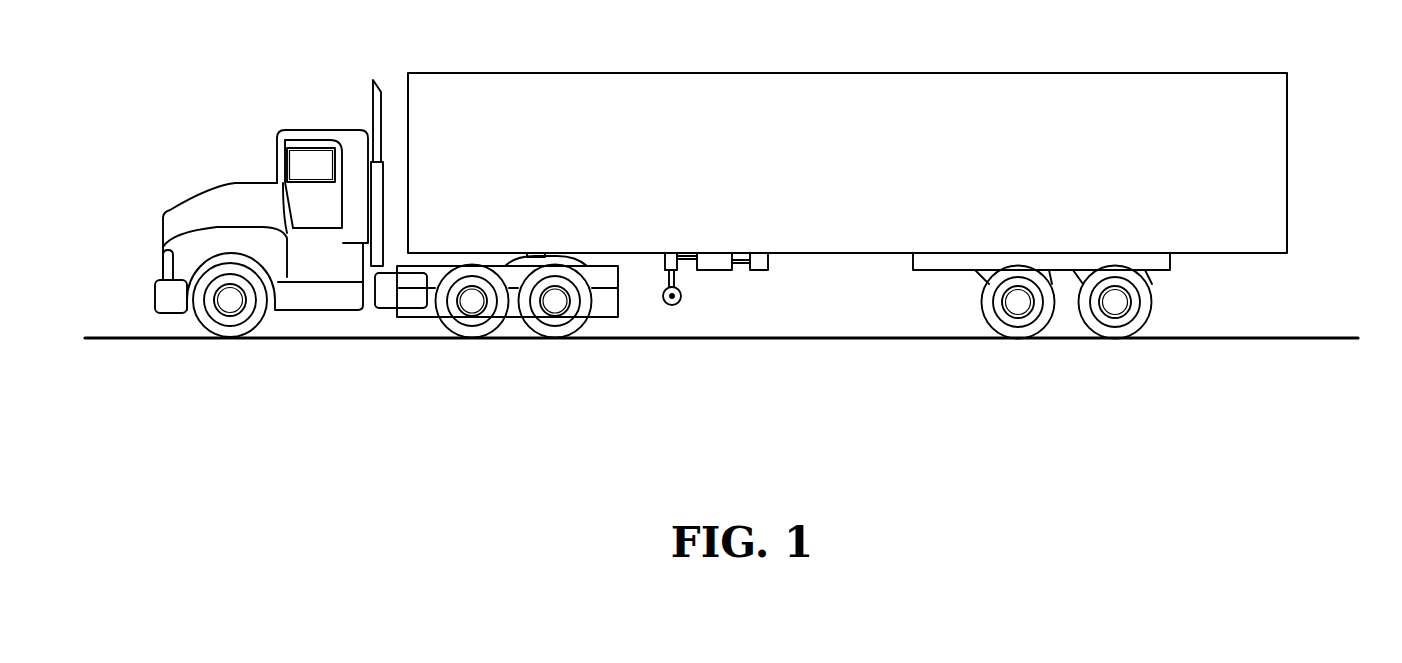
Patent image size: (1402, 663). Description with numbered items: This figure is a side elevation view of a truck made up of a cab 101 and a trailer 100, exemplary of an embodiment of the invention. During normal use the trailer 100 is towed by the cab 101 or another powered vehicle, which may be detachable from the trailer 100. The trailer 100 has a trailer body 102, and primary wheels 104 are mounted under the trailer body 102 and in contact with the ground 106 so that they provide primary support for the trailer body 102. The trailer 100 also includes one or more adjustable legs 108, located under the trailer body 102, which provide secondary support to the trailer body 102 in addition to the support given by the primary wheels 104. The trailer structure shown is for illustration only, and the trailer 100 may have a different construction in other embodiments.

The trailer 100 is at (1138, 58).
The cab 101 is at (307, 130).
The trailer body 102 is at (780, 252).
The primary wheels 104 is at (1163, 325).
The ground 106 is at (1322, 338).
The adjustable legs 108 is at (718, 294).